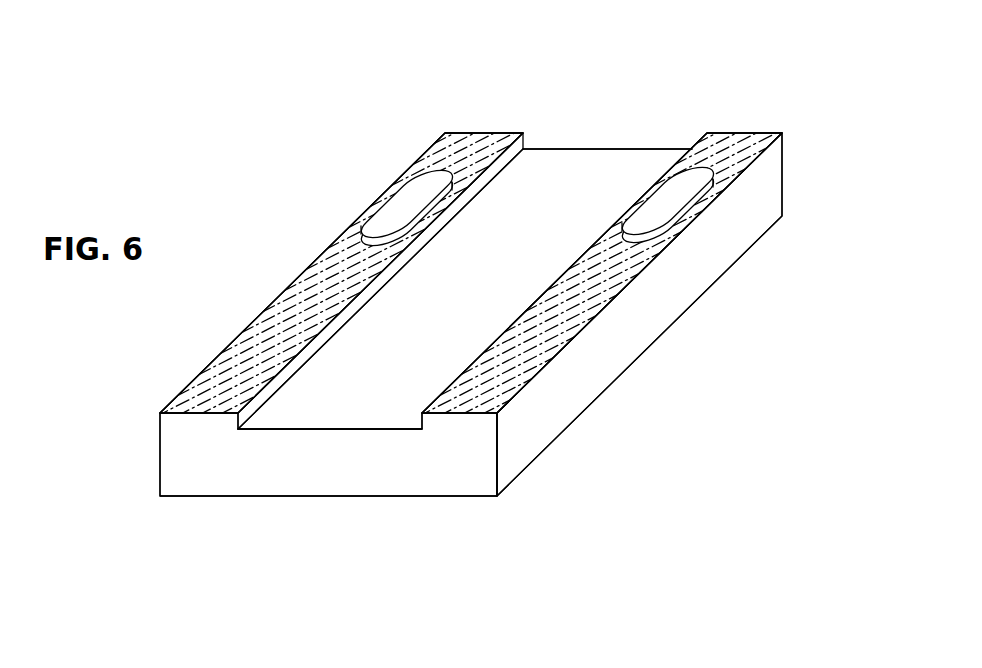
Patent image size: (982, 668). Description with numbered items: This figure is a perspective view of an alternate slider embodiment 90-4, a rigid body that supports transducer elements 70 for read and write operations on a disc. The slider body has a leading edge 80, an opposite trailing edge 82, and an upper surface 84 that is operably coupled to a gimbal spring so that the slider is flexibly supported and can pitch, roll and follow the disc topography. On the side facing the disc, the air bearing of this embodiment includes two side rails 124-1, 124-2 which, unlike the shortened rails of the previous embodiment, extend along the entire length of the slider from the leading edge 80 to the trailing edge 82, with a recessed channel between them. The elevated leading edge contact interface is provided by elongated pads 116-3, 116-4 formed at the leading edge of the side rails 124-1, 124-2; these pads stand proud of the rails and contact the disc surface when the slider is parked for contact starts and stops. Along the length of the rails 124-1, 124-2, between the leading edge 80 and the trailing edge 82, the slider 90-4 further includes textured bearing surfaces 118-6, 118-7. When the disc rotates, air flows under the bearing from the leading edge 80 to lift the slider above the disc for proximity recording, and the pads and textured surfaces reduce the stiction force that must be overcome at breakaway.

The slider 90-4 is at (603, 138).
The transducer elements 70 is at (202, 410).
The leading edge 80 is at (653, 147).
The trailing edge 82 is at (342, 465).
The upper surface 84 is at (738, 260).
The elongated pad 116-3 is at (422, 190).
The elongated pad 116-4 is at (683, 182).
The textured bearing surface 118-6 is at (273, 334).
The textured bearing surface 118-7 is at (516, 366).
The side rail 124-1 is at (308, 268).
The side rail 124-2 is at (632, 277).